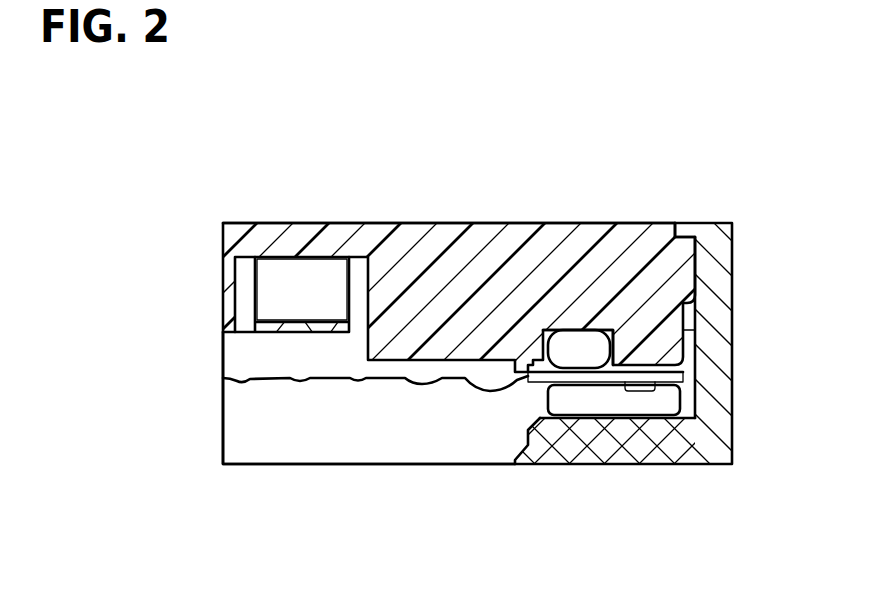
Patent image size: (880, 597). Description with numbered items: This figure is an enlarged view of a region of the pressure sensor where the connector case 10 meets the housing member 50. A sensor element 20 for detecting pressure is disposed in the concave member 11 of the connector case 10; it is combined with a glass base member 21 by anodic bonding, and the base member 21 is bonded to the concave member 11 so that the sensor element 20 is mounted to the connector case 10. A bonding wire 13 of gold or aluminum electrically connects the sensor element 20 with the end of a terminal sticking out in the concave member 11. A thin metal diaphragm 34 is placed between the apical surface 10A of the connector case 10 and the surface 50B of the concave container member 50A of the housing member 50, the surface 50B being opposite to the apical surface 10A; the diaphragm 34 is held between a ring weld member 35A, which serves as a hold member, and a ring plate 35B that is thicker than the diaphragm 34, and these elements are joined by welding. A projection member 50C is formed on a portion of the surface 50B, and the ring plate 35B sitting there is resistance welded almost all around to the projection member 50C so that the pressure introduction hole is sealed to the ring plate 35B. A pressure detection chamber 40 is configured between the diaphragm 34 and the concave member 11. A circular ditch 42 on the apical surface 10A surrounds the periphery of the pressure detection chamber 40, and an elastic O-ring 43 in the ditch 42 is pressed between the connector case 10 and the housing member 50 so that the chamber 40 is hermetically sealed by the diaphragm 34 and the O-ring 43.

The connector case 10 is at (512, 242).
The apical surface 10A is at (562, 402).
The concave member 11 is at (265, 228).
The bonding wire 13 is at (268, 340).
The sensor element 20 is at (329, 327).
The base member 21 is at (288, 275).
The diaphragm 34 is at (453, 377).
The ring weld member 35A is at (533, 383).
The ring plate 35B is at (538, 375).
The pressure detection chamber 40 is at (327, 243).
The ditch 42 is at (553, 327).
The O-ring 43 is at (587, 337).
The housing member 50 is at (712, 247).
The concave container member 50A is at (683, 252).
The surface 50B is at (615, 413).
The projection member 50C is at (640, 418).